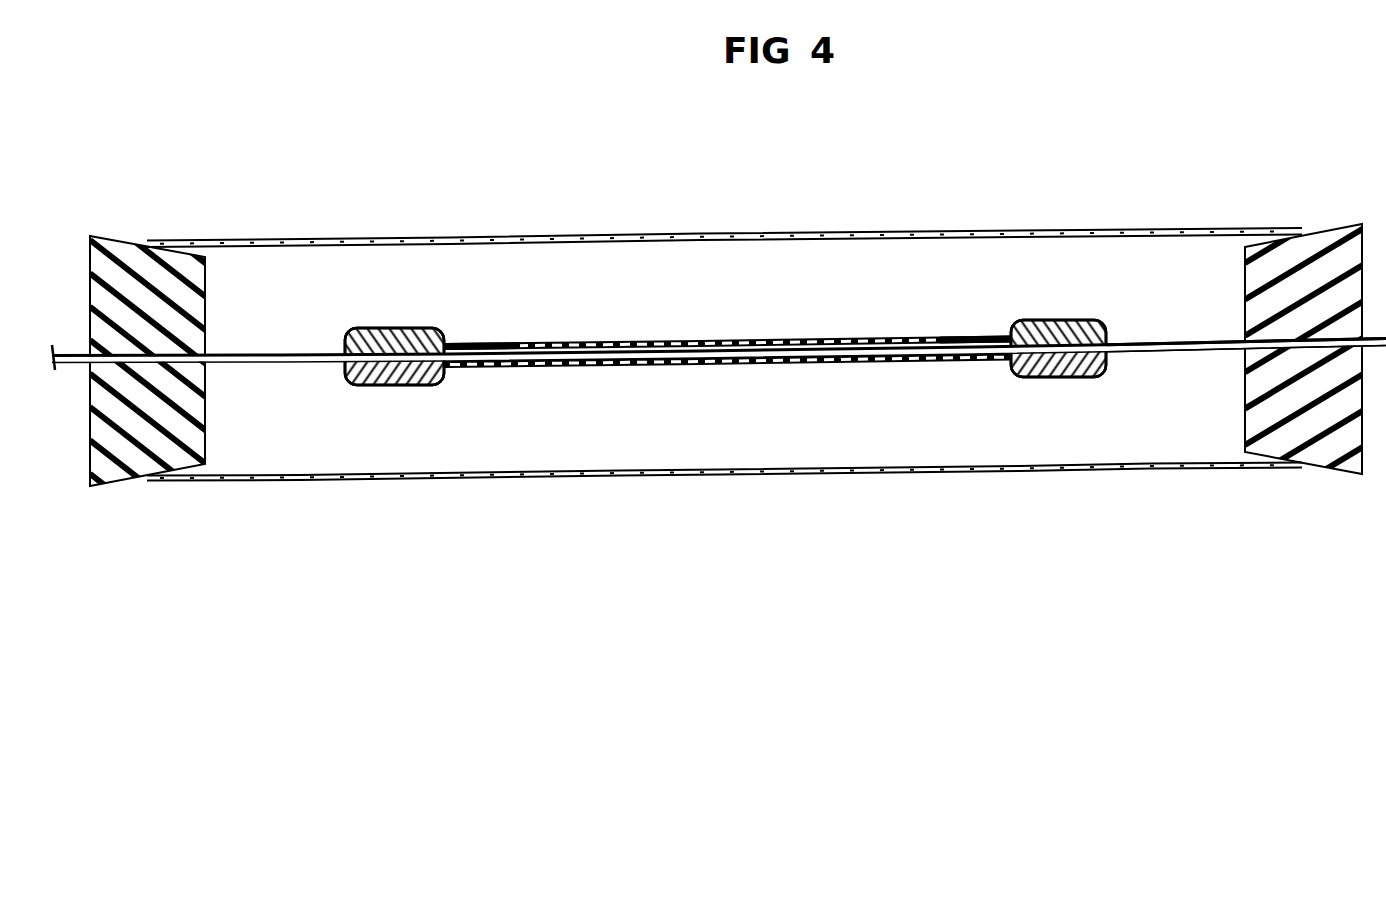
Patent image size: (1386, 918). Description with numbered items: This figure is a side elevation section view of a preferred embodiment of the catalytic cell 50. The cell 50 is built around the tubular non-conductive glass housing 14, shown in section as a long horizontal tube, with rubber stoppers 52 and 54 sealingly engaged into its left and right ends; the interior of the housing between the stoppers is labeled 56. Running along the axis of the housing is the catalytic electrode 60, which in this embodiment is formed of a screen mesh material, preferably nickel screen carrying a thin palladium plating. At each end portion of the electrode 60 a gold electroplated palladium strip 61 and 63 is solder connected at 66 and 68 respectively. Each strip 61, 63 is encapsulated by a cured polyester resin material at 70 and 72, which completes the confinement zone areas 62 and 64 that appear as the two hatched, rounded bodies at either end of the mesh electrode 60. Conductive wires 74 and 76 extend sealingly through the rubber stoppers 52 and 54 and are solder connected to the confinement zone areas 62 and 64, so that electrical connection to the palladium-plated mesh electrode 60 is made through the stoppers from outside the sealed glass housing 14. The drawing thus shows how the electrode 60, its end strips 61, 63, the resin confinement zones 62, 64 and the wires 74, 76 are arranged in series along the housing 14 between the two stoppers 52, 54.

The tubular non-conductive glass housing 14 is at (840, 242).
The catalytic cell 50 is at (724, 364).
The rubber stopper 52 is at (208, 292).
The rubber stopper 54 is at (1336, 467).
The tube lumen 56 is at (790, 427).
The catalytic electrode 60 is at (771, 245).
The gold electroplated palladium strip 61 is at (368, 386).
The confinement zone area 62 is at (398, 387).
The gold electroplated palladium strip 63 is at (1072, 321).
The confinement zone area 64 is at (1018, 377).
The solder connection 66 is at (458, 347).
The solder connection 68 is at (1004, 335).
The cured polyester resin material 70 is at (406, 363).
The cured polyester resin material 72 is at (1118, 372).
The conductive wire 74 is at (719, 356).
The conductive wire 76 is at (1175, 350).